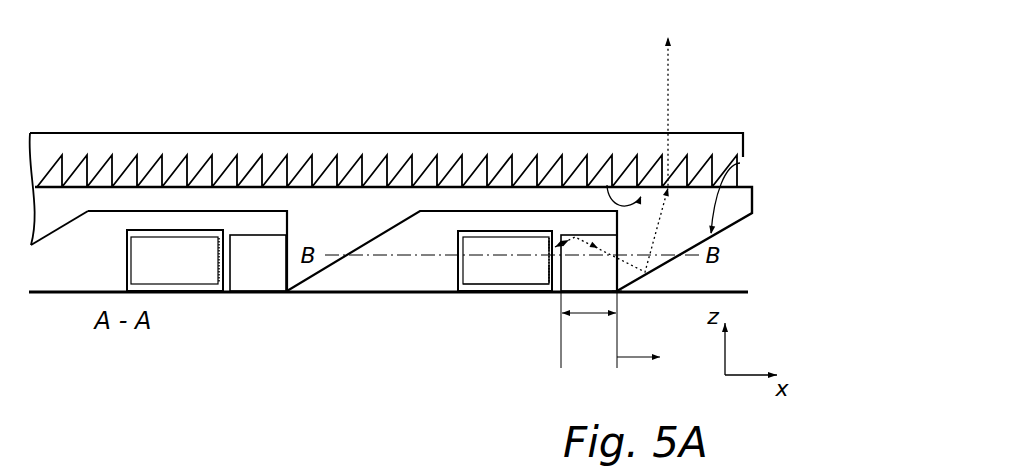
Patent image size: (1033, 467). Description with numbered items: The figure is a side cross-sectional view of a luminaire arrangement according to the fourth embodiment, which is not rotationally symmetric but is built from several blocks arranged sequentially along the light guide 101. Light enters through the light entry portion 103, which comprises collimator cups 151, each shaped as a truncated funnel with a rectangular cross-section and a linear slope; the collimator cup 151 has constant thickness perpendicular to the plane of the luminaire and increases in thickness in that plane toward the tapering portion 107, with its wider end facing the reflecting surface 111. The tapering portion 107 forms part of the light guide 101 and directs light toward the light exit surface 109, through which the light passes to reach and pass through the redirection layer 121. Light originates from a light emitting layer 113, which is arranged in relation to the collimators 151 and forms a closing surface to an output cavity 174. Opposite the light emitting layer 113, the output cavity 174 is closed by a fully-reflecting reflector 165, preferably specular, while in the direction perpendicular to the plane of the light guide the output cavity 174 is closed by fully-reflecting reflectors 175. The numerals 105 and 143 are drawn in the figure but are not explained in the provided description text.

The light guide 101 is at (745, 199).
The light entry portion 103 is at (589, 330).
The light emitting surface 105 is at (545, 243).
The tapering portion 107 is at (641, 372).
The light exit surface 109 is at (607, 185).
The reflecting surface 111 is at (740, 163).
The light emitting layer 113 is at (548, 275).
The redirection layer 121 is at (427, 143).
The output light ray 143 is at (671, 102).
The collimator cup 151 is at (619, 294).
The fully-reflecting reflector 165 is at (462, 267).
The output cavity 174 is at (482, 270).
The fully-reflecting reflector 175 is at (500, 232).